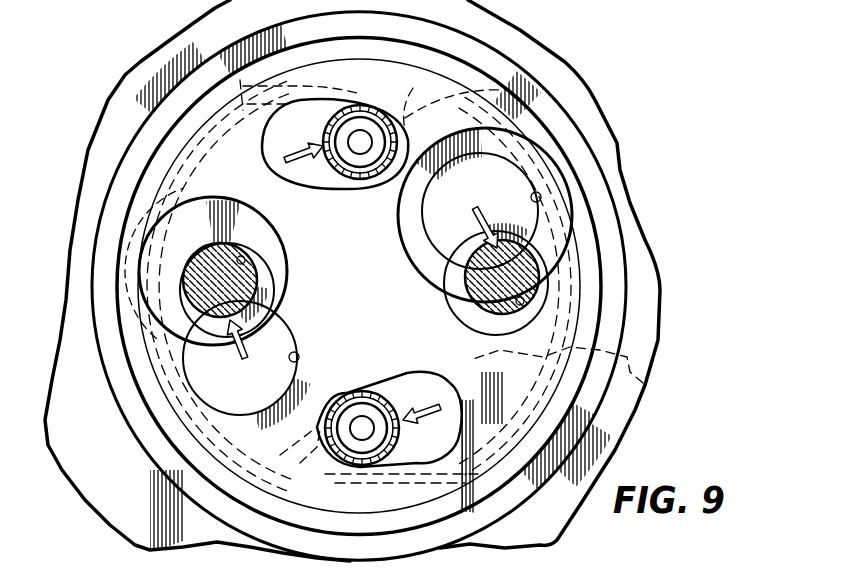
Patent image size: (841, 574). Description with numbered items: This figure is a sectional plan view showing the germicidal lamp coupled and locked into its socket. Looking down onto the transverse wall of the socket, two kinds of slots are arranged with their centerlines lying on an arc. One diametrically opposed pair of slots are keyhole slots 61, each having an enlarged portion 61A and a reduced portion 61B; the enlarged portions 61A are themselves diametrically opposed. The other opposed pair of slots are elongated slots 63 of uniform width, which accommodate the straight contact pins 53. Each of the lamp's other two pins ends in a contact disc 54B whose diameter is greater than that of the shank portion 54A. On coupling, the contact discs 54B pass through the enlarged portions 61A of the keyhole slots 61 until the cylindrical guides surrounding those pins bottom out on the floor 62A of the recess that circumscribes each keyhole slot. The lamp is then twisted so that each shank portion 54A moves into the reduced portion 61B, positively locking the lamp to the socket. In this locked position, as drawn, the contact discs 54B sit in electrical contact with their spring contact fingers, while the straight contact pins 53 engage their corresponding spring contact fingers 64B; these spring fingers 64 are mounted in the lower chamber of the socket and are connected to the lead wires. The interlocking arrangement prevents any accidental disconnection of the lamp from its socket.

The contact pin 53 is at (361, 106).
The shank portion 54A is at (505, 287).
The contact disc 54B is at (238, 322).
The keyhole slot 61 is at (505, 150).
The enlarged portion 61A is at (538, 190).
The reduced portion 61B is at (525, 302).
The floor of the recess 62A is at (470, 137).
The elongated slot 63 is at (266, 131).
The spring finger 64 is at (437, 477).
The spring contact finger 64B is at (370, 281).